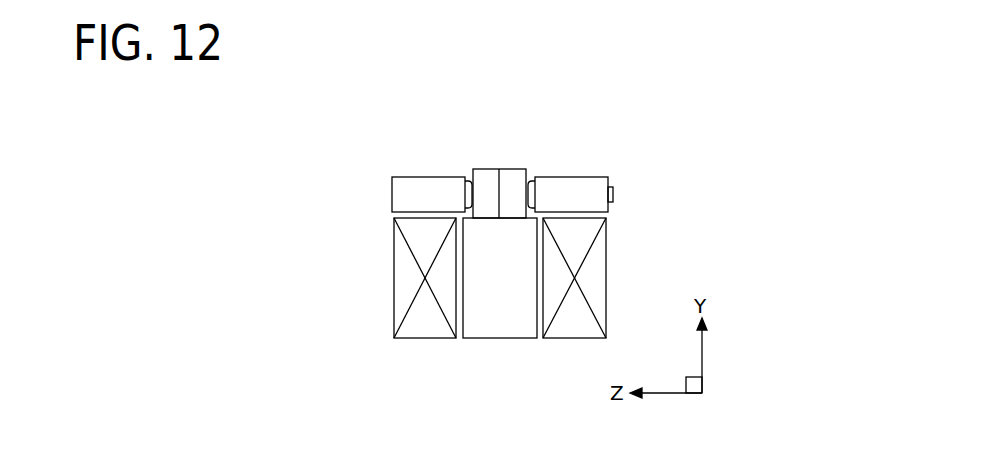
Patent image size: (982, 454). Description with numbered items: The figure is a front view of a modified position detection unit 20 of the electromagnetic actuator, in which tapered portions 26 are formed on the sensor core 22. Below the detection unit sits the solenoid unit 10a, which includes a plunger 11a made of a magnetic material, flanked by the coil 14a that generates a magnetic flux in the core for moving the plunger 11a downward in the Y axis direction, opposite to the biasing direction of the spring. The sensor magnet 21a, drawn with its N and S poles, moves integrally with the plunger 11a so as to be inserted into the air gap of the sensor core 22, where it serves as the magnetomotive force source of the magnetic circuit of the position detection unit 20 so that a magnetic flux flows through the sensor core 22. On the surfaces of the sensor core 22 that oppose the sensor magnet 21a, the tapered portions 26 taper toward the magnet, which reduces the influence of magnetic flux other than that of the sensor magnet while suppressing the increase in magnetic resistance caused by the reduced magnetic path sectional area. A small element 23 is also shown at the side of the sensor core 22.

The position detection unit 20 is at (397, 166).
The tapered portion 26 is at (468, 182).
The sensor magnet 21a is at (505, 169).
The sensor core 22 is at (583, 177).
The tab 23 is at (614, 194).
The solenoid unit 10a is at (466, 304).
The coil 14a is at (420, 331).
The plunger 11a is at (499, 331).